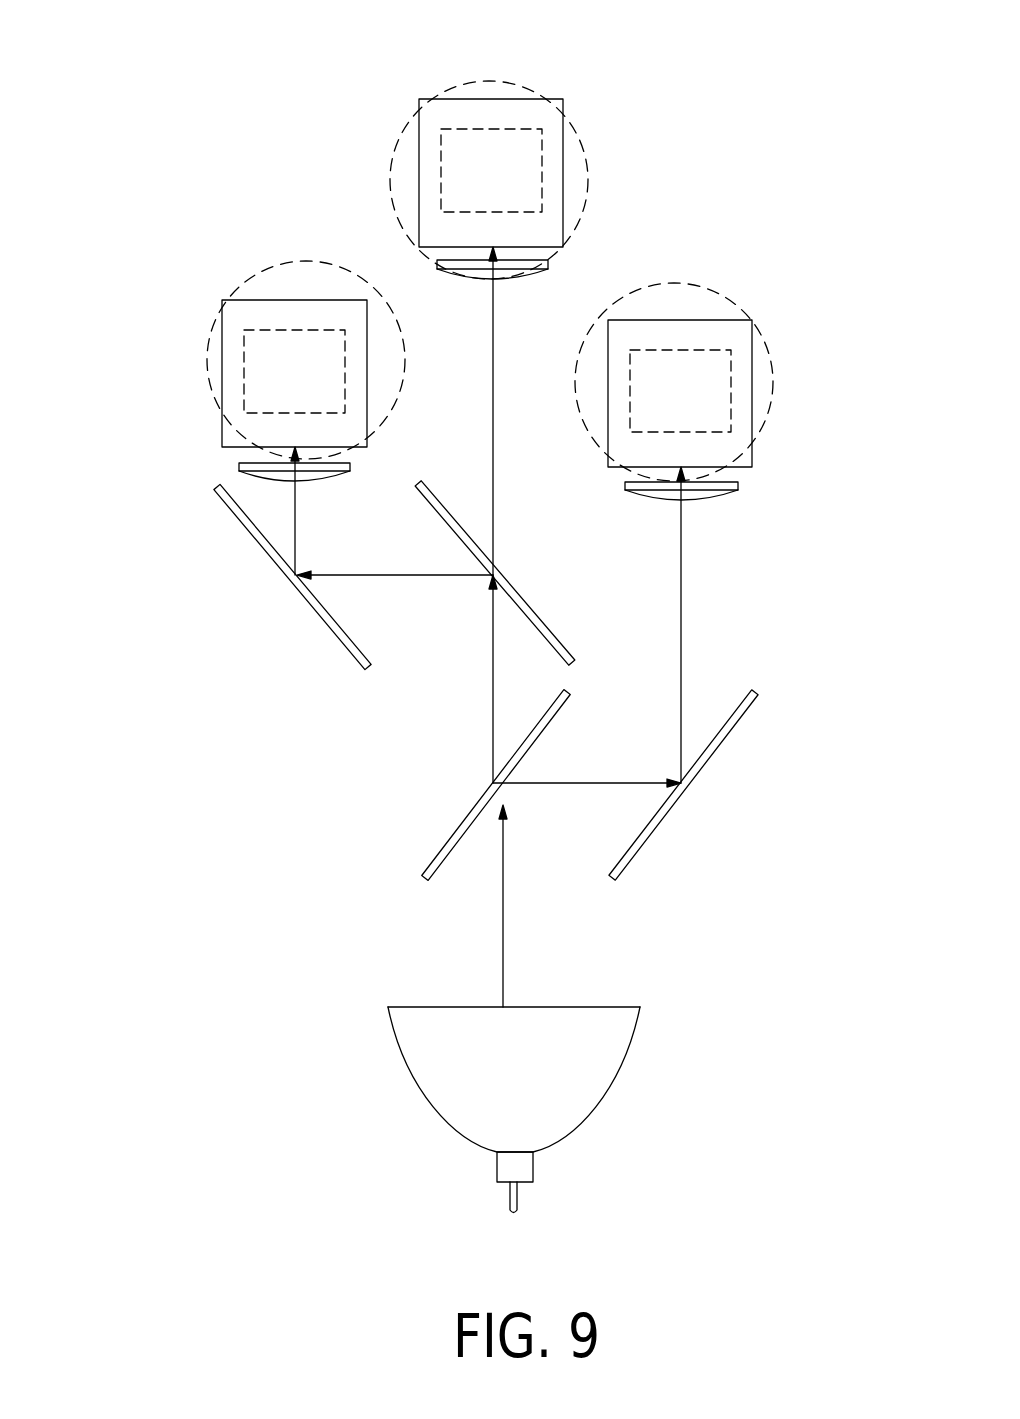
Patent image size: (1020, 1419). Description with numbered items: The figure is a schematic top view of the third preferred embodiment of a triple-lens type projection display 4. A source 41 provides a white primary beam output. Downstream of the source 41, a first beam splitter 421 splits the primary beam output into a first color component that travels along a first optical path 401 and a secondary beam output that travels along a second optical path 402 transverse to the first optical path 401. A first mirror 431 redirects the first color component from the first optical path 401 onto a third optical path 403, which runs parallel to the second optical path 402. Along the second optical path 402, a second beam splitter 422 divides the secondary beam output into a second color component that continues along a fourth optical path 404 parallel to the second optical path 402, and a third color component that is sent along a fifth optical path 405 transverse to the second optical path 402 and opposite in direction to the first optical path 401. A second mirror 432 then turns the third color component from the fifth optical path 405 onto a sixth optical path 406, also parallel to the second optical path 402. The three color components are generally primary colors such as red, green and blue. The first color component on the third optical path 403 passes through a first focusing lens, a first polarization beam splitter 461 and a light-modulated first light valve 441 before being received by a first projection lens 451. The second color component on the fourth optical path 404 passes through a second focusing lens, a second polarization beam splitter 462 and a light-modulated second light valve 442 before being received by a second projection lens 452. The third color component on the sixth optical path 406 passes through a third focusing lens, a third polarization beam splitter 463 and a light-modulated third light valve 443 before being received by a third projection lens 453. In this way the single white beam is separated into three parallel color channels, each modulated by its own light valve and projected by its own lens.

The triple-lens type projection display 4 is at (249, 790).
The source 41 is at (587, 1058).
The first optical path 401 is at (572, 783).
The second optical path 402 is at (493, 633).
The third optical path 403 is at (682, 612).
The fourth optical path 404 is at (493, 457).
The fifth optical path 405 is at (382, 575).
The sixth optical path 406 is at (295, 507).
The first beam splitter 421 is at (438, 857).
The second beam splitter 422 is at (528, 603).
The first mirror 431 is at (658, 827).
The second mirror 432 is at (347, 652).
The first light valve 441 is at (731, 407).
The second light valve 442 is at (542, 185).
The third light valve 443 is at (233, 413).
The first projection lens 451 is at (770, 323).
The second projection lens 452 is at (515, 82).
The third projection lens 453 is at (257, 275).
The first polarization beam splitter 461 is at (738, 377).
The second polarization beam splitter 462 is at (562, 148).
The third polarization beam splitter 463 is at (222, 338).